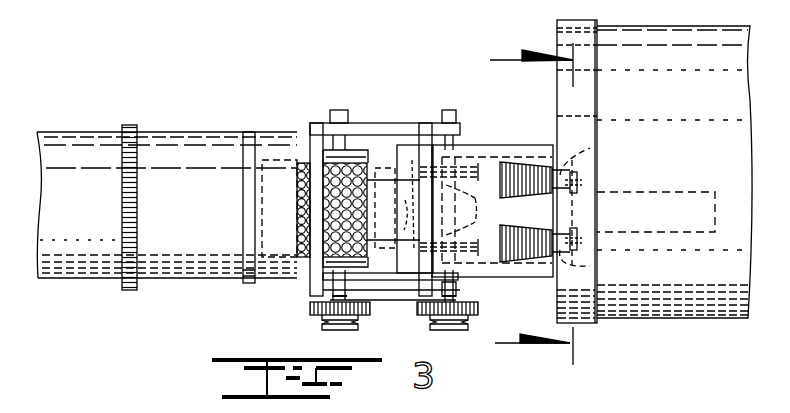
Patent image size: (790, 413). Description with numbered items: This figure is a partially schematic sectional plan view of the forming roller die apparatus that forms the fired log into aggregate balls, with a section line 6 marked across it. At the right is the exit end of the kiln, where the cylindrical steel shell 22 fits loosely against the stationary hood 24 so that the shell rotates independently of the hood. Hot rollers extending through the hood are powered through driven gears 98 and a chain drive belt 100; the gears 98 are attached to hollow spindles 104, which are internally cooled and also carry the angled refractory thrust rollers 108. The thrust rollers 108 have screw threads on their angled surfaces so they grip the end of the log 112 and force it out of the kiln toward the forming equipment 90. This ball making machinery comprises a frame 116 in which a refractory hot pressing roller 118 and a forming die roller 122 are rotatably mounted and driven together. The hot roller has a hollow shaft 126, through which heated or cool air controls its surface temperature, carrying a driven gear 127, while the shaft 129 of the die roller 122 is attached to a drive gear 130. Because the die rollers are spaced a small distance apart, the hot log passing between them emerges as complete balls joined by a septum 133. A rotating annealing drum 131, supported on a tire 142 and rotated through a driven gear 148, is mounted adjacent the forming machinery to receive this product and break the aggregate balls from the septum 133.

The cylindrical steel shell 22 is at (688, 320).
The stationary hood 24 is at (558, 33).
The forming equipment 90 is at (318, 120).
The driven gear 98 is at (580, 180).
The chain drive belt 100 is at (597, 213).
The hollow spindle 104 is at (590, 148).
The angled refractory thrust roller 108 is at (511, 160).
The log 112 is at (663, 190).
The frame 116 is at (375, 124).
The refractory hot pressing roller 118 is at (478, 185).
The forming die roller 122 is at (366, 168).
The hollow shaft 126 is at (458, 300).
The driven gear 127 is at (425, 314).
The shaft 129 is at (312, 300).
The drive gear 130 is at (310, 310).
The rotating annealing drum 131 is at (83, 128).
The septum 133 is at (258, 210).
The tire 142 is at (250, 130).
The driven gear 148 is at (137, 128).
The section line 6- 6 is at (521, 204).